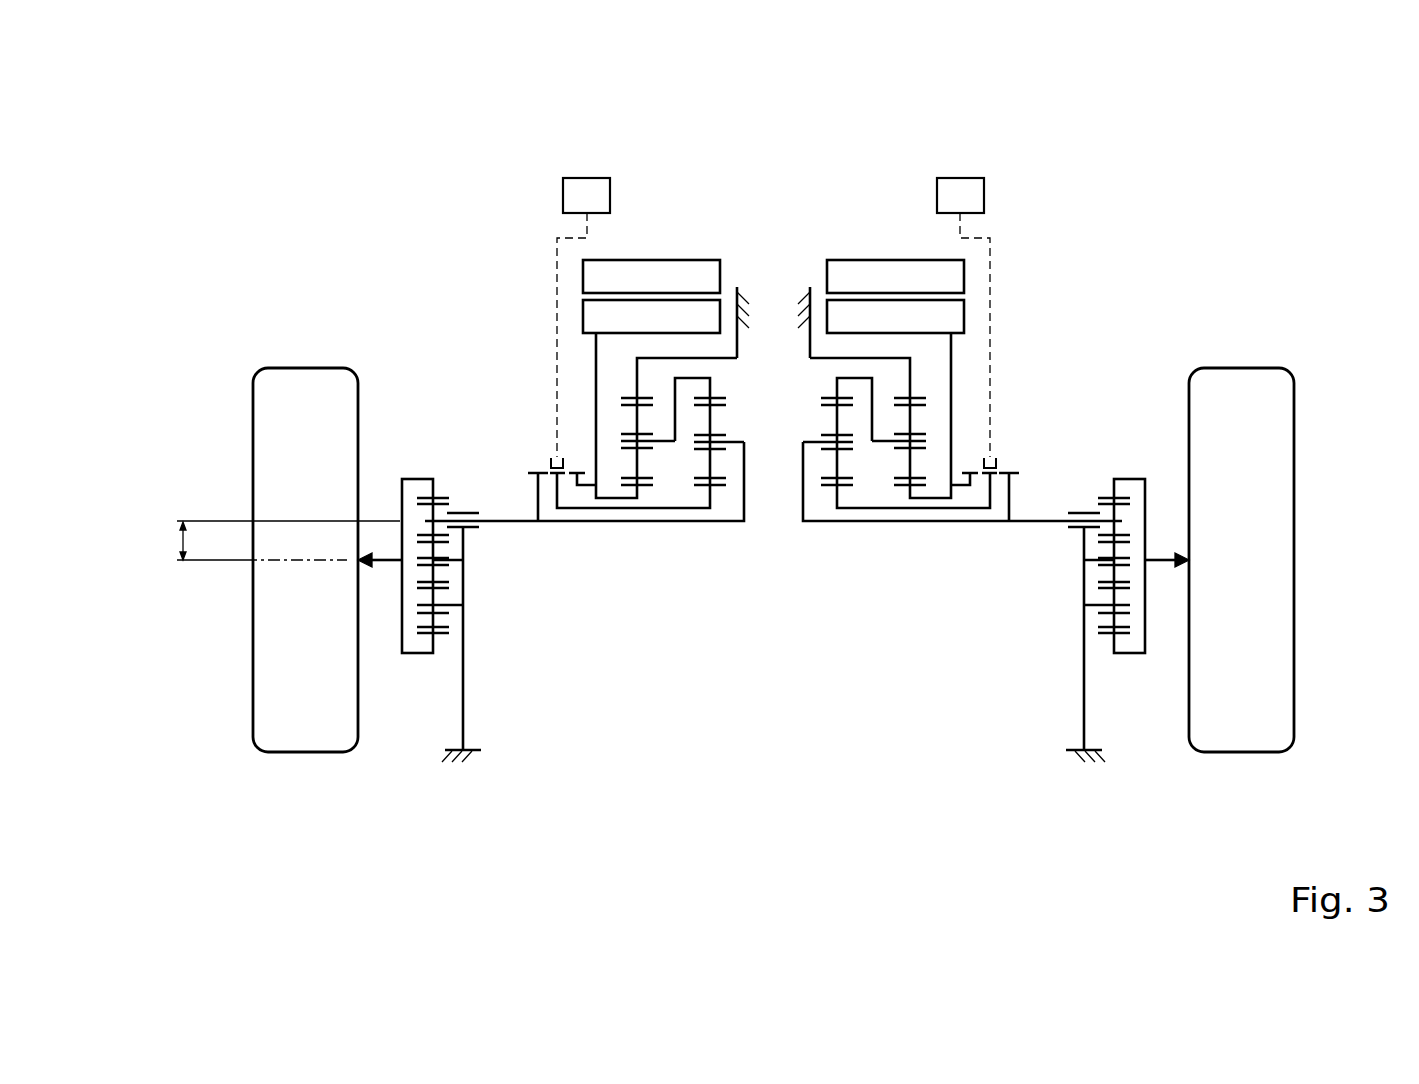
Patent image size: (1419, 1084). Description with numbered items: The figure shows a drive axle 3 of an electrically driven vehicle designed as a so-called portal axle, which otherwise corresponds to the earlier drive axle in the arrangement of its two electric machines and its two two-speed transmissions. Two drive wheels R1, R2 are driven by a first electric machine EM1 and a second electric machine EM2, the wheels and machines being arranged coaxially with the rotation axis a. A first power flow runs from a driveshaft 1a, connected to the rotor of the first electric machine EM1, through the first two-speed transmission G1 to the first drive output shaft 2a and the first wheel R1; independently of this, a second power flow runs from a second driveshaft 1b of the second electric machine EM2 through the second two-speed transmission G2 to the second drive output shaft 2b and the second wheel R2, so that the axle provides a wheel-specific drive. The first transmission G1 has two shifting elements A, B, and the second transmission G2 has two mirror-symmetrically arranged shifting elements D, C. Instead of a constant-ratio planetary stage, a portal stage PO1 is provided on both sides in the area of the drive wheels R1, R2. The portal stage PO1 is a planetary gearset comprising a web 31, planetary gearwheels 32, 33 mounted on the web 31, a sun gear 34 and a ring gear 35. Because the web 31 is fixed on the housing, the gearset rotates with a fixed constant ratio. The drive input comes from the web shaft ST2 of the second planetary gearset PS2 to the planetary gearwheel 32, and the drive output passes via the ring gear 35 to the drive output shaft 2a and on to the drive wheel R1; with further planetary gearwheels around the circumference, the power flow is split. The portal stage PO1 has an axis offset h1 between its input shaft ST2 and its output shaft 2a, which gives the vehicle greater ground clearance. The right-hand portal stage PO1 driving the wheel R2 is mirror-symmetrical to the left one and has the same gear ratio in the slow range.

The drive axle 3 is at (760, 463).
The driveshaft 1a is at (613, 464).
The second driveshaft 1b is at (960, 464).
The first electric machine EM1 is at (632, 241).
The second electric machine EM2 is at (905, 241).
The first two-speed transmission G1 is at (613, 592).
The second two-speed transmission G2 is at (962, 592).
The second shiftable planetary gearset PS2 is at (711, 547).
The web shaft ST2 is at (723, 522).
The portal stage PO1 is at (645, 608).
The first drive wheel R1 is at (298, 692).
The second drive wheel R2 is at (1237, 595).
The first drive output shaft 2a is at (395, 563).
The second drive output shaft 2b is at (1157, 553).
The rotation axis a is at (293, 561).
The axis offset h1 is at (272, 540).
The web 31 is at (463, 667).
The planetary gearwheel 32 is at (415, 513).
The planetary gearwheel 33 is at (433, 617).
The sun gear 34 is at (433, 572).
The ring gear 35 is at (415, 478).
The shifting element A is at (538, 477).
The shifting element B is at (573, 459).
The shifting element C is at (1009, 477).
The shifting element D is at (974, 459).